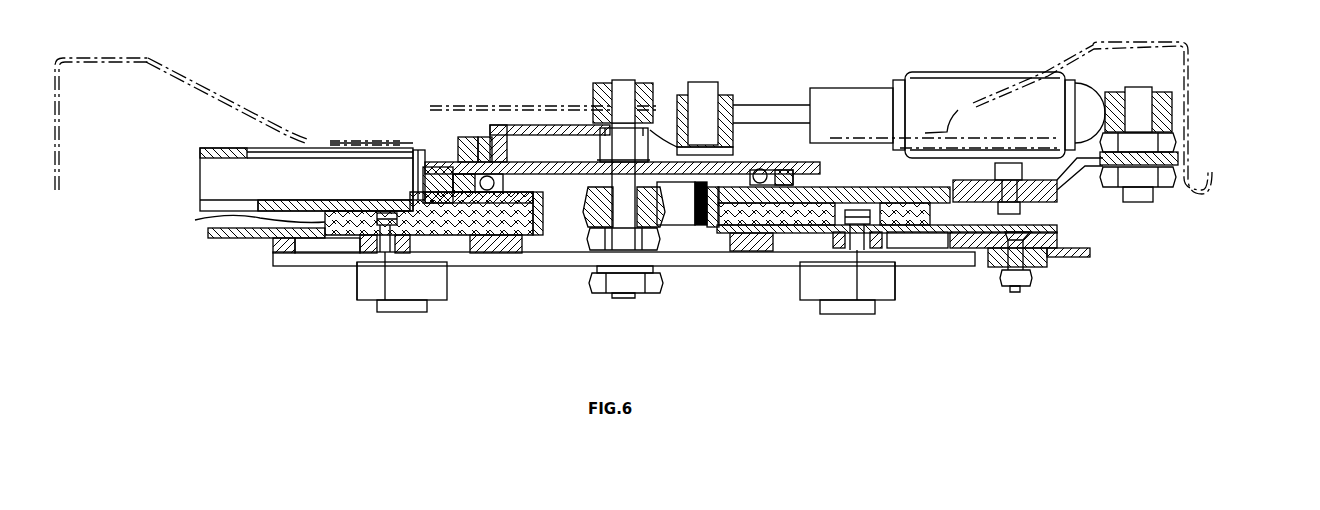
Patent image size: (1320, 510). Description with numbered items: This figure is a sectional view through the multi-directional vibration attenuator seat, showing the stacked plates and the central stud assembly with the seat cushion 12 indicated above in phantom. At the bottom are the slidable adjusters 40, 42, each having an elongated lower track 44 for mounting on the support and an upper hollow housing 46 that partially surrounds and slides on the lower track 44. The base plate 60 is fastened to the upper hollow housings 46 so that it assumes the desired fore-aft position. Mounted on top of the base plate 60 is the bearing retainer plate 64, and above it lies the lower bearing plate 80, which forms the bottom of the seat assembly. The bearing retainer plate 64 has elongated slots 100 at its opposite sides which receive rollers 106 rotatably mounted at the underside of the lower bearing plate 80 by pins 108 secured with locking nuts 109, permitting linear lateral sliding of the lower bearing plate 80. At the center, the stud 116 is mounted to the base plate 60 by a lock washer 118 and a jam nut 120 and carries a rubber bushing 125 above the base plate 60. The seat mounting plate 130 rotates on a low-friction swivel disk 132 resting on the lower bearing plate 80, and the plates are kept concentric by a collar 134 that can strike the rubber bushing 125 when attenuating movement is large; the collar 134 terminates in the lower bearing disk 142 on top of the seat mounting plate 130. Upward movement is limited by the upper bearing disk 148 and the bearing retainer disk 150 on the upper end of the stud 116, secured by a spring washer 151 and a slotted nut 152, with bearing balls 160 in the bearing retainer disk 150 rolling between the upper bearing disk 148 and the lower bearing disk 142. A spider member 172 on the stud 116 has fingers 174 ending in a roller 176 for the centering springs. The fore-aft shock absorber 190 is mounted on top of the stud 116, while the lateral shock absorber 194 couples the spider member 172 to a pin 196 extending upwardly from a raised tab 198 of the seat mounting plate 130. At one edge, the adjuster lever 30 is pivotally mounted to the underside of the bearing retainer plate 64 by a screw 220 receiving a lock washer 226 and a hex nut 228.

The seat cushion 12 is at (184, 72).
The adjuster lever 30 is at (1085, 250).
The slidable adjuster 40 is at (892, 280).
The slidable adjuster 42 is at (356, 294).
The lower track 44 is at (428, 314).
The upper hollow housing 46 is at (447, 286).
The base plate 60 is at (288, 266).
The bearing retainer plate 64 is at (278, 244).
The lower bearing plate 80 is at (218, 240).
The elongated slots 100 is at (310, 252).
The rollers 106 is at (408, 244).
The pins 108 is at (388, 300).
The locking nuts 109 is at (362, 212).
The stud 116 is at (652, 188).
The lock washer 118 is at (653, 270).
The jam nut 120 is at (652, 295).
The rubber bushing 125 is at (650, 213).
The seat mounting plate 130 is at (205, 182).
The swivel disk 132 is at (200, 221).
The collar 134 is at (545, 222).
The lower bearing disk 142 is at (422, 148).
The upper bearing disk 148 is at (430, 170).
The bearing retainer disk 150 is at (460, 176).
The spring washer 151 is at (596, 158).
The slotted nut 152 is at (596, 150).
The bearing balls 160 is at (765, 170).
The spider member 172 is at (528, 126).
The fingers 174 is at (486, 138).
The roller 176 is at (466, 138).
The fore-aft shock absorber 190 is at (648, 90).
The lateral shock absorber 194 is at (955, 74).
The pin 196 is at (1136, 92).
The raised tab 198 is at (1172, 152).
The screw 220 is at (1030, 230).
The lock washer 226 is at (1040, 266).
The hex nut 228 is at (1018, 288).